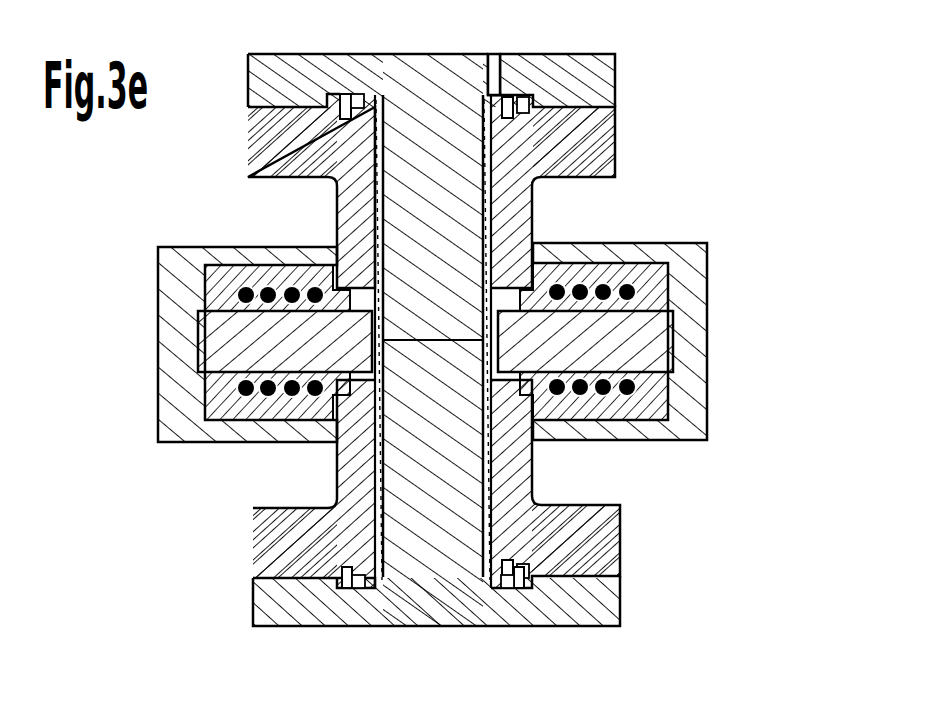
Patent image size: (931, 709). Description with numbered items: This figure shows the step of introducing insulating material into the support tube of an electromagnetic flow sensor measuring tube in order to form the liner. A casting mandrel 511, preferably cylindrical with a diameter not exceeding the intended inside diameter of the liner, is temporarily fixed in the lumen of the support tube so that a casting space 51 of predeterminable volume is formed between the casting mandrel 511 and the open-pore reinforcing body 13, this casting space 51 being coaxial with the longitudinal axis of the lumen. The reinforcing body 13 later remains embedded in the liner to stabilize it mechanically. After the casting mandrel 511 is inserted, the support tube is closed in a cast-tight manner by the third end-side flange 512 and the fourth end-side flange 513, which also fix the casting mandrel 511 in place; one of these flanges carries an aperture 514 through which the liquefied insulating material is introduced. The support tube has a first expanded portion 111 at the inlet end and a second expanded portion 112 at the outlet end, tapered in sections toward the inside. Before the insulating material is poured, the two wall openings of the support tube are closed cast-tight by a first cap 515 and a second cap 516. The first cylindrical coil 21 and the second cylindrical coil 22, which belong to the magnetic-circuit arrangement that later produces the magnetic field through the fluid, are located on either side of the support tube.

The fourth end-side flange 513 is at (330, 54).
The aperture 514 is at (500, 54).
The first expanded portion 111 is at (497, 122).
The first cylindrical coil 21 is at (243, 289).
The second cylindrical coil 22 is at (647, 243).
The second cap 516 is at (690, 284).
The first cap 515 is at (165, 376).
The casting mandrel 511 is at (408, 448).
The second expanded portion 112 is at (505, 548).
The casting space 51 is at (382, 572).
The third end-side flange 512 is at (443, 613).
The reinforcing body 13 is at (500, 575).